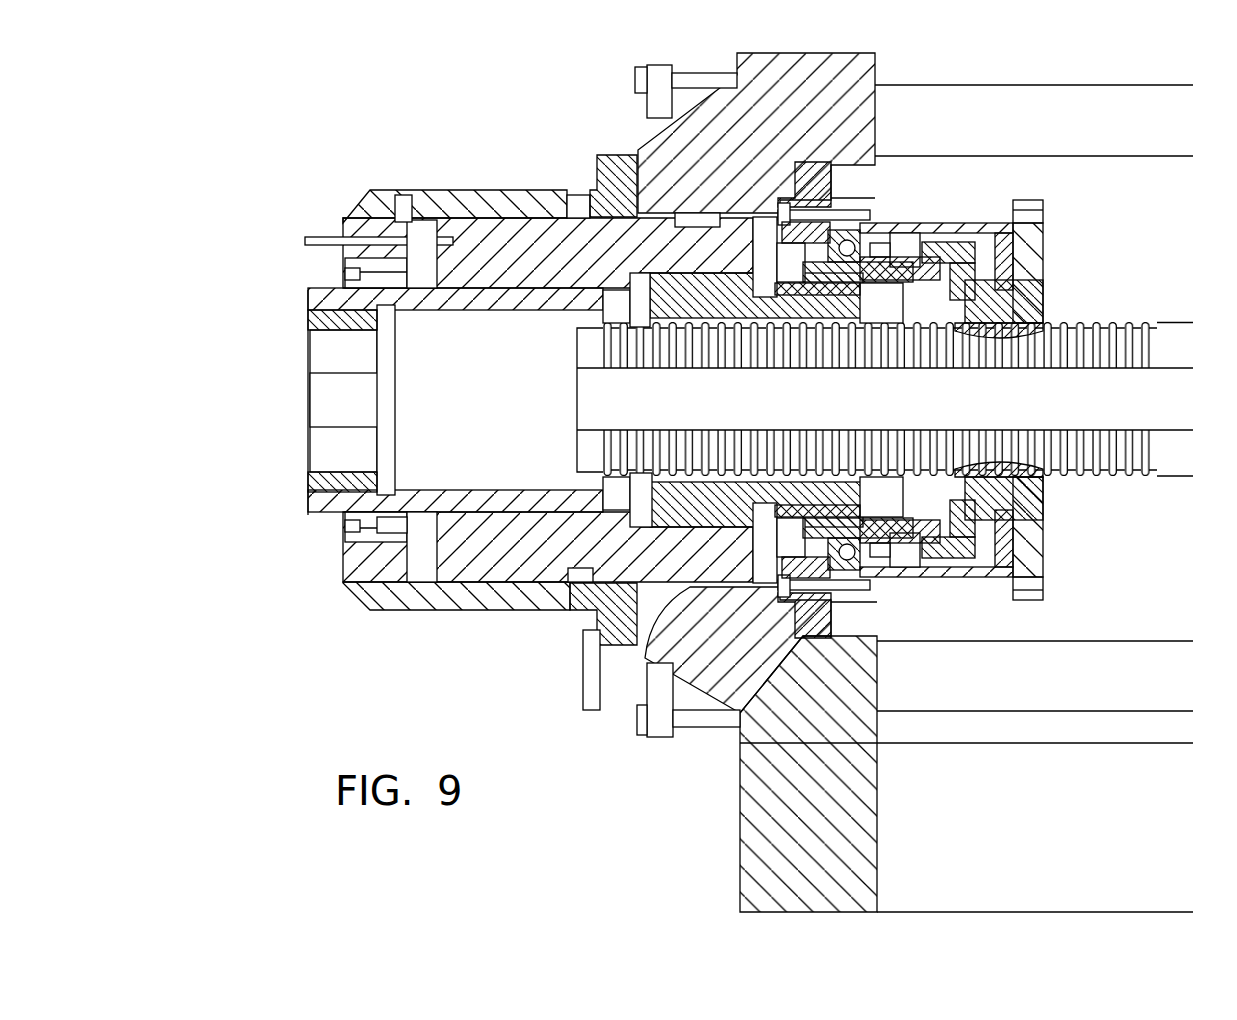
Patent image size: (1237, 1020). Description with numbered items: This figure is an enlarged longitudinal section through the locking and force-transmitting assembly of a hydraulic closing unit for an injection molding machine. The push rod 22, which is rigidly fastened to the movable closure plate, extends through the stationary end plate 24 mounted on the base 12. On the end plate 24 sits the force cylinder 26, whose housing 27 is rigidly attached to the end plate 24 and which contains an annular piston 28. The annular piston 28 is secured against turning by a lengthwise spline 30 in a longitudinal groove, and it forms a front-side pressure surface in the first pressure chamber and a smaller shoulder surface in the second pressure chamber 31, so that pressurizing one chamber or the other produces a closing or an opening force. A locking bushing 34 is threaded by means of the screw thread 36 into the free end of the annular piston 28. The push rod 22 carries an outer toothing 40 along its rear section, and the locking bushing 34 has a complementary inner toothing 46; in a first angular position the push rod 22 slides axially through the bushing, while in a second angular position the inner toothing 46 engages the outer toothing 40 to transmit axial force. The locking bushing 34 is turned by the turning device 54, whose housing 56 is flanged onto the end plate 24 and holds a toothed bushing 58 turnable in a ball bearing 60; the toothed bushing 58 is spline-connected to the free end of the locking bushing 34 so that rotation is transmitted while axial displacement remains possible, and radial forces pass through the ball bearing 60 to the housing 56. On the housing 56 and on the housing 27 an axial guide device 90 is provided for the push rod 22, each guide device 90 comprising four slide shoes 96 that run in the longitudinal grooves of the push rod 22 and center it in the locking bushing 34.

The base 12 is at (722, 410).
The push rod 22 is at (1148, 482).
The end plate 24 is at (752, 842).
The force cylinder 26 is at (515, 158).
The housing 27 is at (378, 590).
The annular piston 28 is at (483, 245).
The lengthwise spline 30 is at (742, 218).
The second pressure chamber 31 is at (565, 205).
The locking bushing 34 is at (705, 515).
The screw thread 36 is at (660, 275).
The outer toothing 40 is at (595, 343).
The inner toothing 46 is at (605, 556).
The turning device 54 is at (975, 590).
The housing 56 is at (892, 225).
The toothed bushing 58 is at (953, 248).
The ball bearing 60 is at (882, 560).
The axial guide device 90 is at (1048, 232).
The slide shoe 96 is at (1042, 302).